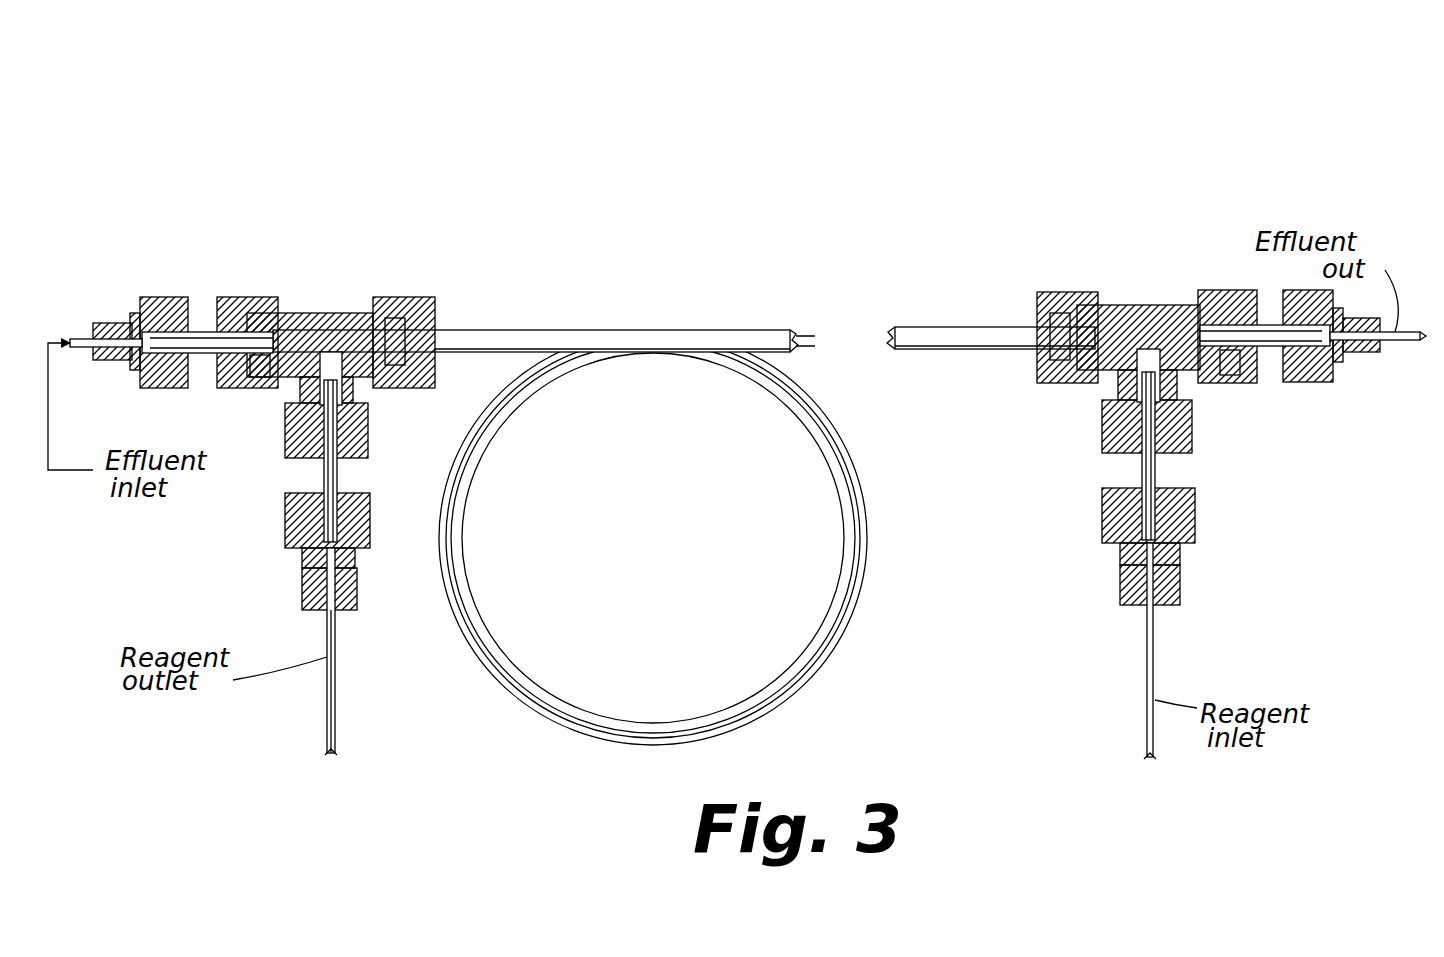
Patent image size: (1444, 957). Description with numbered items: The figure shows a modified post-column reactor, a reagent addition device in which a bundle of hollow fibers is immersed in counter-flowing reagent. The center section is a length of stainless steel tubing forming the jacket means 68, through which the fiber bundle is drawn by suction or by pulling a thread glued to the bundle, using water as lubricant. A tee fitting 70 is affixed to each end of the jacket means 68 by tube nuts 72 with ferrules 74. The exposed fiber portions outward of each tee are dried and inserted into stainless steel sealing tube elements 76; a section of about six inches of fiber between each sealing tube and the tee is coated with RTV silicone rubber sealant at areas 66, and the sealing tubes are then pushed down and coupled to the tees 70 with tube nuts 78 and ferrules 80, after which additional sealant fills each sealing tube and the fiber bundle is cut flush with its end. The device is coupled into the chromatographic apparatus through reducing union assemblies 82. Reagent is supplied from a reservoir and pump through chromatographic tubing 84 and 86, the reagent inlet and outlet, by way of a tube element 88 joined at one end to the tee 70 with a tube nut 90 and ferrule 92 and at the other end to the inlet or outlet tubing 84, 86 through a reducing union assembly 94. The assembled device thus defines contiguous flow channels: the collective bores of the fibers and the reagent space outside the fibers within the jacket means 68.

The sealant areas 66 is at (210, 345).
The jacket means 68 is at (705, 340).
The tee fitting 70 is at (313, 318).
The tube nut 72 is at (437, 306).
The ferrule 74 is at (397, 313).
The sealing tube element 76 is at (208, 338).
The tube nut 78 is at (262, 378).
The ferrule 80 is at (249, 318).
The reducing union assembly 82 is at (128, 298).
The reagent inlet chromatographic tubing 84 is at (1147, 652).
The reagent outlet chromatographic tubing 86 is at (335, 714).
The tube element 88 is at (340, 472).
The tube nut 90 is at (368, 442).
The ferrule 92 is at (345, 428).
The reducing union assembly 94 is at (280, 535).